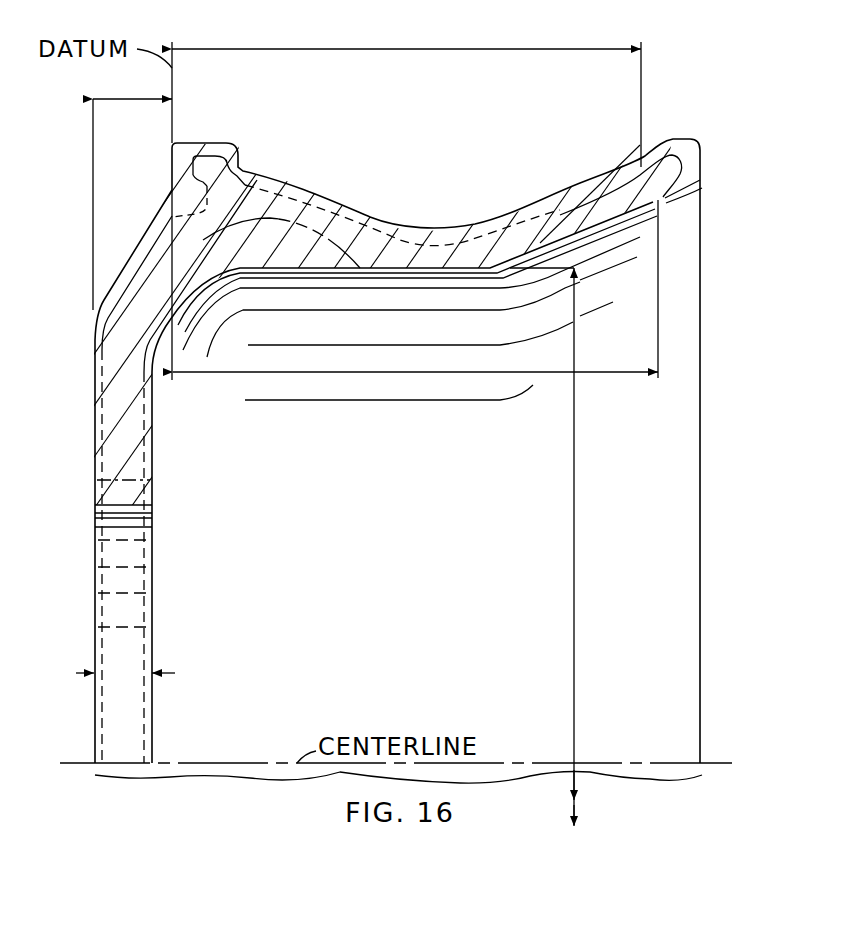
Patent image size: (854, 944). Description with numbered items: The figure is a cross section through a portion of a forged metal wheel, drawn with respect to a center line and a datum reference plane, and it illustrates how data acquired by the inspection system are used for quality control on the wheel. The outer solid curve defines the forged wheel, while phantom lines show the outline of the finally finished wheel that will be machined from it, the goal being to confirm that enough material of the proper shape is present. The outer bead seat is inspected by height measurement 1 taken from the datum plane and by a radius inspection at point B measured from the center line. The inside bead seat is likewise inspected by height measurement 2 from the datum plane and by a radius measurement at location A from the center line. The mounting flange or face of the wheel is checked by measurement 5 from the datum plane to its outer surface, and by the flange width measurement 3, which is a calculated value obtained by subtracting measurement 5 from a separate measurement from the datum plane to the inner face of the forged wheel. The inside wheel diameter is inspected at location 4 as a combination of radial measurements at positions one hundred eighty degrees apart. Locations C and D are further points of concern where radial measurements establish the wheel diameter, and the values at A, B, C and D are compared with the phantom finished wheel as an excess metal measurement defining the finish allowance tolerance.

The height measurement 1 is at (478, 49).
The height measurement 2 is at (495, 372).
The width measurement 3 is at (136, 674).
The inside wheel diameter location 4 is at (575, 572).
The mounting flange measurement 5 is at (93, 99).
The inside bead seat radius location A is at (668, 201).
The outer bead seat radius point B is at (668, 140).
The location of concern C is at (553, 189).
The location of concern D is at (318, 186).